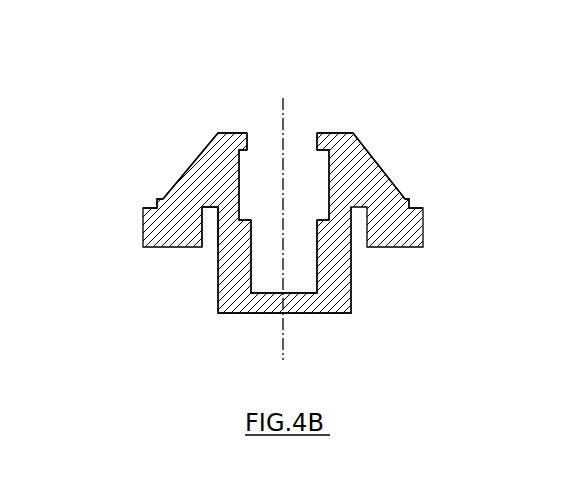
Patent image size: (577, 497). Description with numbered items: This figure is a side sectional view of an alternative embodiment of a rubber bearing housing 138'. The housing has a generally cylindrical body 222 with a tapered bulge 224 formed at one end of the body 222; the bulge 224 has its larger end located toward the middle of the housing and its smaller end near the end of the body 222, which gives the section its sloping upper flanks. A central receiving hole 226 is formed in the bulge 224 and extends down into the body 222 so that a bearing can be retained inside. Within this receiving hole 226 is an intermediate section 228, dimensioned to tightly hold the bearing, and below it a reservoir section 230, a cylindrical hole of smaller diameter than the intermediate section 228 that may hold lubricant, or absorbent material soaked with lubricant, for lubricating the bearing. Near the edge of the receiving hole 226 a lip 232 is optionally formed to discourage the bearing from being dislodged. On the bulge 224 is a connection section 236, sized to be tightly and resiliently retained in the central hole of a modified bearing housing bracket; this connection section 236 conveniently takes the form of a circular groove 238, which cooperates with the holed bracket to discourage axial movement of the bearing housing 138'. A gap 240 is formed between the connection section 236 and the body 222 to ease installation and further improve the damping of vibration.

The rubber bearing housing 138' is at (288, 176).
The body 222 is at (350, 293).
The tapered bulge 224 is at (372, 158).
The central receiving hole 226 is at (272, 122).
The intermediate section 228 is at (250, 146).
The reservoir section 230 is at (315, 278).
The lip 232 is at (316, 133).
The connection section 236 is at (158, 200).
The circular groove 238 is at (409, 201).
The gap 240 is at (211, 219).